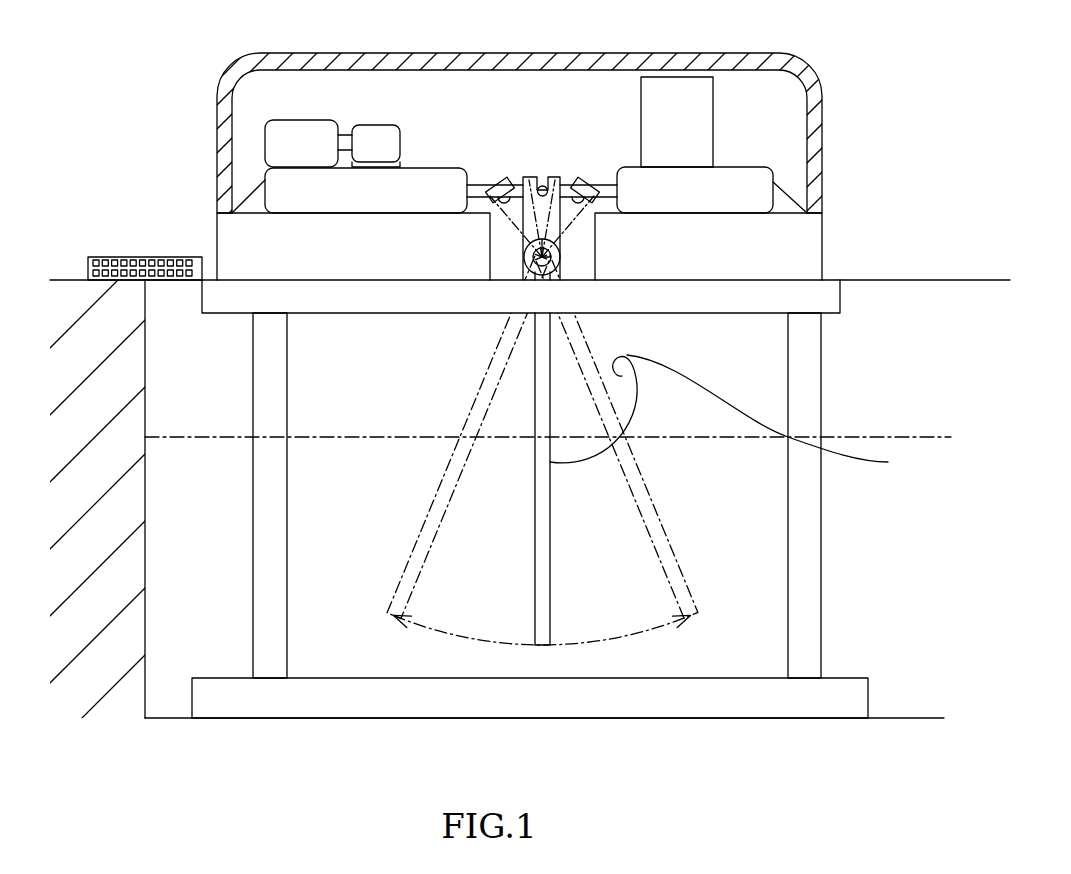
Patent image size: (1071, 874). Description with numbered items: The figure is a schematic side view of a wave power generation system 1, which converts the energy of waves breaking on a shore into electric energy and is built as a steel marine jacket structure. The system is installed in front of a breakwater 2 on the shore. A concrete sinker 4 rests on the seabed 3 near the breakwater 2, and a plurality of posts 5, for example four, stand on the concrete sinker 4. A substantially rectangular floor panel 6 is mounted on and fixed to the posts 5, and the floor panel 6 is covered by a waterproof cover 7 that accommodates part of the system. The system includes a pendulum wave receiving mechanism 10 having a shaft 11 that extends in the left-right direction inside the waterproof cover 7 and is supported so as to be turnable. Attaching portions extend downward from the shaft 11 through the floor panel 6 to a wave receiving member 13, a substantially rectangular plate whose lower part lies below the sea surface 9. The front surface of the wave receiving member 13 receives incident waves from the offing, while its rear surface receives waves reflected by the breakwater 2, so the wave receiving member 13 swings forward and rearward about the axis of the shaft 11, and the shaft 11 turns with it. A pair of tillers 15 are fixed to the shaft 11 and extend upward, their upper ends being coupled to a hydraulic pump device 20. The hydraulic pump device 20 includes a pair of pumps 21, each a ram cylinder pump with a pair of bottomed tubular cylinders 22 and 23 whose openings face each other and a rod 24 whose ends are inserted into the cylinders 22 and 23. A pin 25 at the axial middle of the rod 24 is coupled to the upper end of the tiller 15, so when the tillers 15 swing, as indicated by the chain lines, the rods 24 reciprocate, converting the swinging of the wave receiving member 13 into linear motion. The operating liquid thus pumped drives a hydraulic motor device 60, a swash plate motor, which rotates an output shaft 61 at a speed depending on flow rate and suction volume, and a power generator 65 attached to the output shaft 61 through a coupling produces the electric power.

The wave power generation system 1 is at (782, 70).
The breakwater 2 is at (67, 287).
The seabed 3 is at (430, 718).
The concrete sinker 4 is at (497, 708).
The posts 5 is at (265, 628).
The floor panel 6 is at (838, 298).
The waterproof cover 7 is at (817, 153).
The sea surface 9 is at (862, 437).
The wave receiving mechanism 10 is at (554, 449).
The shaft 11 is at (548, 262).
The wave receiving member 13 is at (432, 510).
The tillers 15 is at (508, 180).
The hydraulic pump device 20 is at (756, 145).
The pumps 21 is at (519, 223).
The cylinder 22 is at (327, 205).
The cylinder 23 is at (720, 205).
The rod 24 is at (605, 185).
The pin 25 is at (545, 180).
The hydraulic motor device 60 is at (297, 127).
The output shaft 61 is at (343, 134).
The power generator 65 is at (380, 126).